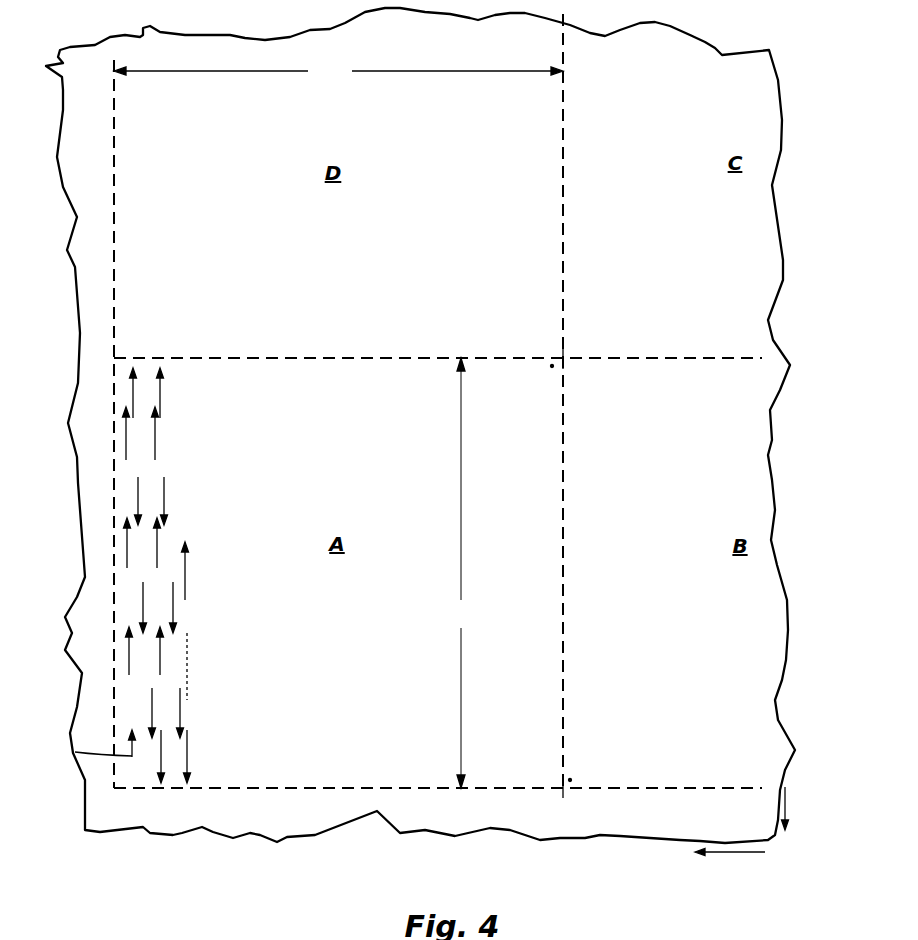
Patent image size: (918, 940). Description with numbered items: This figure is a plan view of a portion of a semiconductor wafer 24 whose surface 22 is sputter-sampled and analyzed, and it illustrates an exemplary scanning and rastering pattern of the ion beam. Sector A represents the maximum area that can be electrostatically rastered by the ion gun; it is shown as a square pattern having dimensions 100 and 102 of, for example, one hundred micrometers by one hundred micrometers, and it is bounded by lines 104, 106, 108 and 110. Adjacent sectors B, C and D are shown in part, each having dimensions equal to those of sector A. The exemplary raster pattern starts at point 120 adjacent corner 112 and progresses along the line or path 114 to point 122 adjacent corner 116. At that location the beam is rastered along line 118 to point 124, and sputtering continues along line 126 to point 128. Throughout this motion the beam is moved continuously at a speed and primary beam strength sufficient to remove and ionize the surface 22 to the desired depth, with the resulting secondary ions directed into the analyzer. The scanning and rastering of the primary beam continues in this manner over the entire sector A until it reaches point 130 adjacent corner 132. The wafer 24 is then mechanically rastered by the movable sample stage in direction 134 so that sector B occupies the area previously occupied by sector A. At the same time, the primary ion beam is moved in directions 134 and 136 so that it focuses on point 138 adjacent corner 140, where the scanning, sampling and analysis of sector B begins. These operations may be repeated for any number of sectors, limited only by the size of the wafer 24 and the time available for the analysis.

The surface 22 is at (342, 718).
The wafer 24 is at (223, 838).
The dimension 100 is at (338, 71).
The dimension 102 is at (460, 573).
The line 104 is at (115, 133).
The line 106 is at (563, 247).
The line 108 is at (250, 788).
The line 110 is at (228, 358).
The corner 112 is at (85, 820).
The line or path 114 is at (75, 752).
The corner 116 is at (115, 350).
The line 118 is at (138, 495).
The point 120 is at (130, 778).
The point 122 is at (133, 358).
The point 124 is at (160, 788).
The line 126 is at (160, 655).
The point 128 is at (162, 358).
The point 130 is at (552, 366).
The corner 132 is at (563, 357).
The direction 134 is at (720, 853).
The direction 136 is at (778, 804).
The point 138 is at (570, 780).
The corner 140 is at (563, 795).